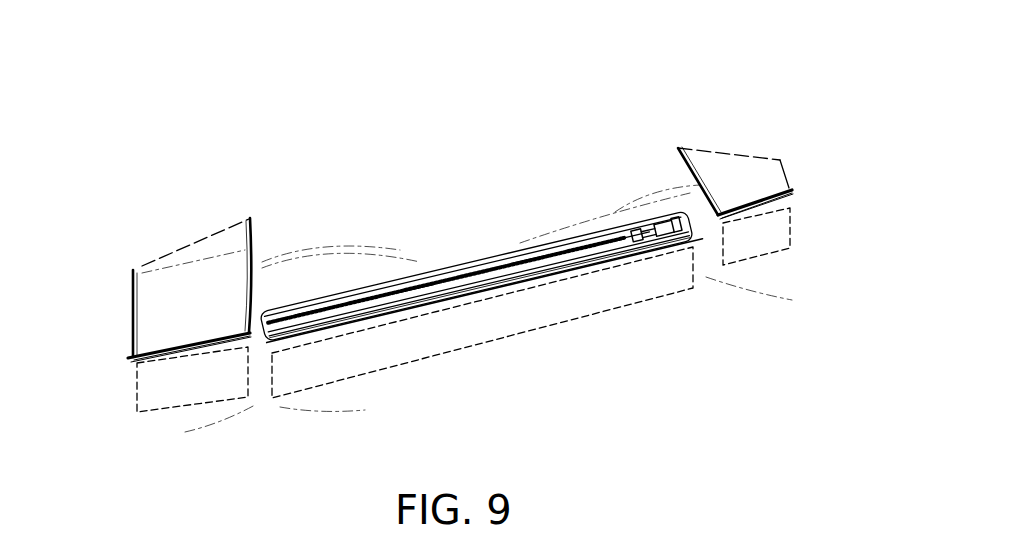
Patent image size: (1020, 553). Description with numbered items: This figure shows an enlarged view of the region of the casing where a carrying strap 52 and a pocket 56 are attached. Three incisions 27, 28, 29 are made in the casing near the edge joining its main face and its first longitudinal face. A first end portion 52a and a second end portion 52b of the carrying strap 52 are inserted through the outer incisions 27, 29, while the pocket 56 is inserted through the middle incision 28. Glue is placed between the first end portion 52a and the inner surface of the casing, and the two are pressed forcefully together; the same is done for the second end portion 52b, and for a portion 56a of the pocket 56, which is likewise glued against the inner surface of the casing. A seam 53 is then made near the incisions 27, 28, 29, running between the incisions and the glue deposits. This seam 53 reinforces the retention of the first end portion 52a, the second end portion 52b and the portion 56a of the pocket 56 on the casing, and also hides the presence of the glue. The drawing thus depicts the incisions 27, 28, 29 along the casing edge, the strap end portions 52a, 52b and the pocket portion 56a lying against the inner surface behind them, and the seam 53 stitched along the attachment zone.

The incision 27 is at (152, 355).
The incision 28 is at (353, 292).
The incision 29 is at (791, 188).
The carrying strap 52 is at (750, 172).
The first end portion 52a is at (163, 388).
The second end portion 52b is at (753, 242).
The seam 53 is at (147, 362).
The pocket 56 is at (523, 260).
The portion of the pocket 56a is at (520, 317).